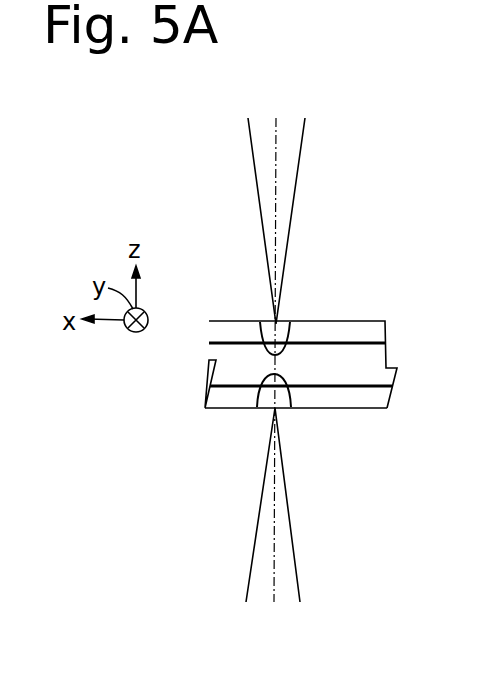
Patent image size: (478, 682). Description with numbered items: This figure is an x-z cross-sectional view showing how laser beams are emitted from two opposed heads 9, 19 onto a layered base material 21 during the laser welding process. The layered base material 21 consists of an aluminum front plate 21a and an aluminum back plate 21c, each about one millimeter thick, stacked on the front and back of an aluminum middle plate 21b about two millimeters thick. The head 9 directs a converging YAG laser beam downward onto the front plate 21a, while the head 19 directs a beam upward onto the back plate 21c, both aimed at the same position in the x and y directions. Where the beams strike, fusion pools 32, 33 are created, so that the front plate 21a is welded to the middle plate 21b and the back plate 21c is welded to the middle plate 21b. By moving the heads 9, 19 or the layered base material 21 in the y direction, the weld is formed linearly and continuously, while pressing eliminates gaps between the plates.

The head 9 is at (287, 111).
The head 19 is at (293, 637).
The layered base material 21 is at (303, 310).
The front plate 21a is at (342, 330).
The middle plate 21b is at (345, 375).
The back plate 21c is at (303, 397).
The fusion pool 32 is at (265, 318).
The fusion pool 33 is at (268, 405).